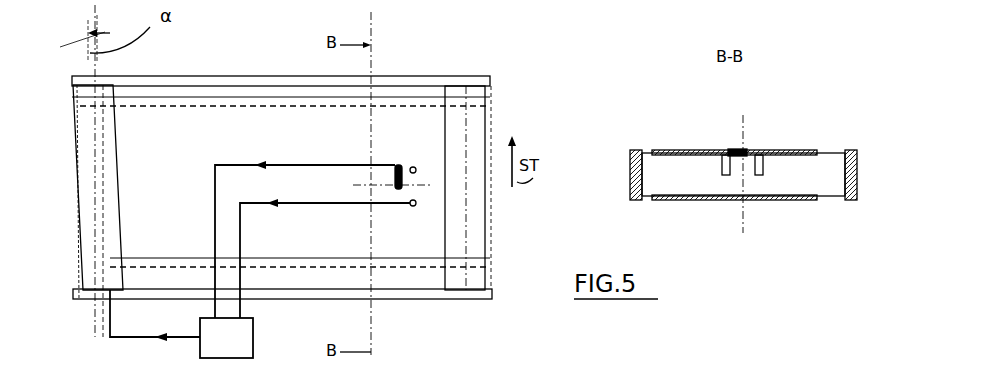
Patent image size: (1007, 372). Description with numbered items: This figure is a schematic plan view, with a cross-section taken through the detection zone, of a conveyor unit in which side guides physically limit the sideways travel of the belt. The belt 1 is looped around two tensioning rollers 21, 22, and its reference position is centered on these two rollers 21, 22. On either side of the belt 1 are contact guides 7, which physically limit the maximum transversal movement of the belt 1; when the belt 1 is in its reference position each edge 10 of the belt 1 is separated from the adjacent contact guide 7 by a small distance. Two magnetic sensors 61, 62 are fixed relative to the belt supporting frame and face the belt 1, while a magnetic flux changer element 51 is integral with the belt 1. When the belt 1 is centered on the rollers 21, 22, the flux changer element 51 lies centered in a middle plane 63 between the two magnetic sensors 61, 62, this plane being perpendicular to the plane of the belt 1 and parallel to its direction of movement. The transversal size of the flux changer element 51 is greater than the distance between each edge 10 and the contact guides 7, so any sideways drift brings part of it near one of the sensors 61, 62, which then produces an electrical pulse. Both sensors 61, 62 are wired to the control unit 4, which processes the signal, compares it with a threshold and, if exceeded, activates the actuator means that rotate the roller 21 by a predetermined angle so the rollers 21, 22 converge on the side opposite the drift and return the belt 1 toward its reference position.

The belt 1 is at (238, 100).
The control unit 4 is at (240, 350).
The contact guides 7 is at (400, 80).
The edge of the belt 10 is at (227, 98).
The tensioning roller 21 is at (103, 90).
The tensioning roller 22 is at (484, 89).
The magnetic flux changer element 51 is at (393, 173).
The magnetic sensor 61 is at (413, 167).
The magnetic sensor 62 is at (411, 206).
The middle plane 63 is at (358, 186).